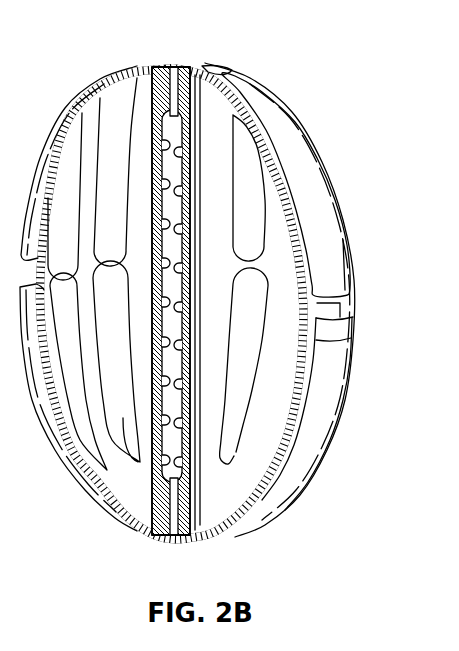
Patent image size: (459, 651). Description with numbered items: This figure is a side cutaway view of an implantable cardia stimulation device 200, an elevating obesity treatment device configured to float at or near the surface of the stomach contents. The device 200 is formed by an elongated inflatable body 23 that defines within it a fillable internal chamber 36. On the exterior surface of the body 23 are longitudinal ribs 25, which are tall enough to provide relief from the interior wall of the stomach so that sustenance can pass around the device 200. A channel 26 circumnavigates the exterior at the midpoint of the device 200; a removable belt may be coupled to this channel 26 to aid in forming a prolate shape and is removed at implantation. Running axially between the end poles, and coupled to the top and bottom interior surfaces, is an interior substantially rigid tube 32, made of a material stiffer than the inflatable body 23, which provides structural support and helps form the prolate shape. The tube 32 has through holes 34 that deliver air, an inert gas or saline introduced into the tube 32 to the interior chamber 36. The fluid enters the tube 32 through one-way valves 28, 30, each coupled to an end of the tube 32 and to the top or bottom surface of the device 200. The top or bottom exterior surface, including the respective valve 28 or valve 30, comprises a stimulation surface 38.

The implantable cardia stimulation device 200 is at (197, 290).
The elongated inflatable body 23 is at (62, 156).
The longitudinal ribs 25 is at (323, 222).
The channel 26 is at (330, 302).
The one-way valve 28 is at (173, 537).
The one-way valve 30 is at (172, 67).
The interior substantially rigid tube 32 is at (172, 386).
The through holes 34 is at (192, 152).
The fillable internal chamber 36 is at (125, 472).
The stimulation surface 38 is at (238, 78).